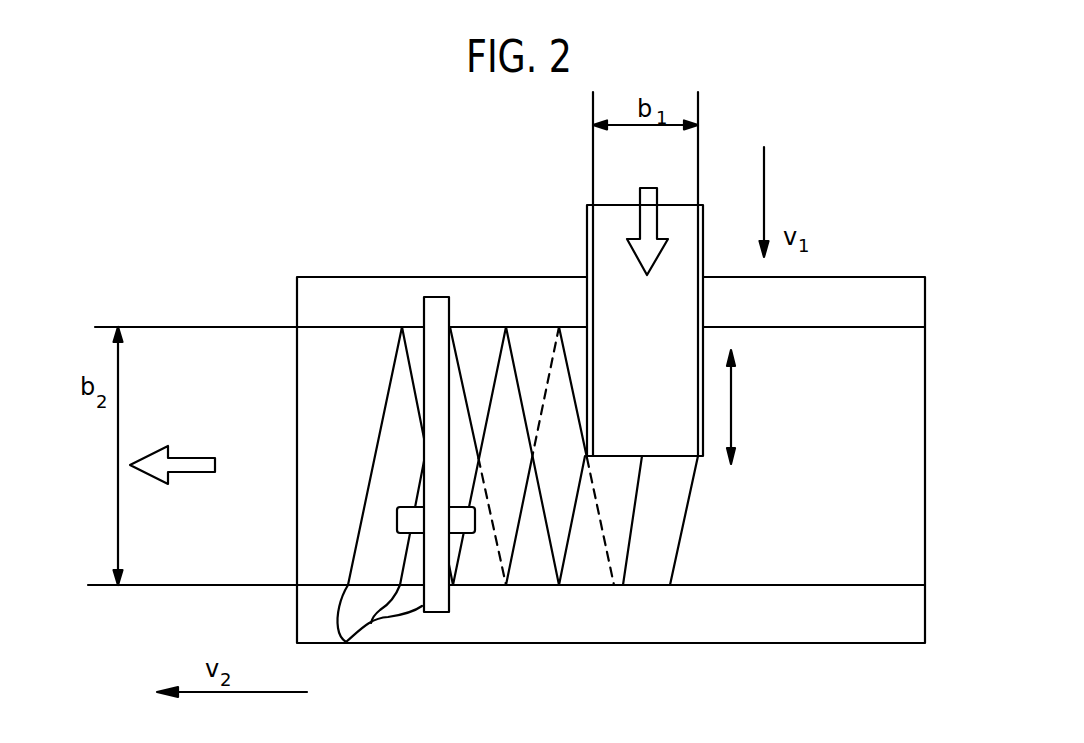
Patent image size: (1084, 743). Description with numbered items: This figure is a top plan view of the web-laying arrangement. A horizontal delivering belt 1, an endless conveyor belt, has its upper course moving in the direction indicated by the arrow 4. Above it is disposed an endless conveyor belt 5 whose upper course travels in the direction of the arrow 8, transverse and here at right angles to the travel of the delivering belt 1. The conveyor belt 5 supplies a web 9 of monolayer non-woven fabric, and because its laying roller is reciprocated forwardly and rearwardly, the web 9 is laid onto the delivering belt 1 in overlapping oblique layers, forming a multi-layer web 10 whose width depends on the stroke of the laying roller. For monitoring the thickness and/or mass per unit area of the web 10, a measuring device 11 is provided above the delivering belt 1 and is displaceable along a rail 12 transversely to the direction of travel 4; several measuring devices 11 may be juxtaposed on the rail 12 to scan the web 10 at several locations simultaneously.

The delivering belt 1 is at (418, 277).
The arrow 4 is at (211, 457).
The conveyor belt 5 is at (703, 312).
The arrow 8 is at (657, 189).
The web 9 is at (685, 510).
The multi-layer web 10 is at (514, 458).
The measuring device 11 is at (397, 520).
The rail 12 is at (449, 608).